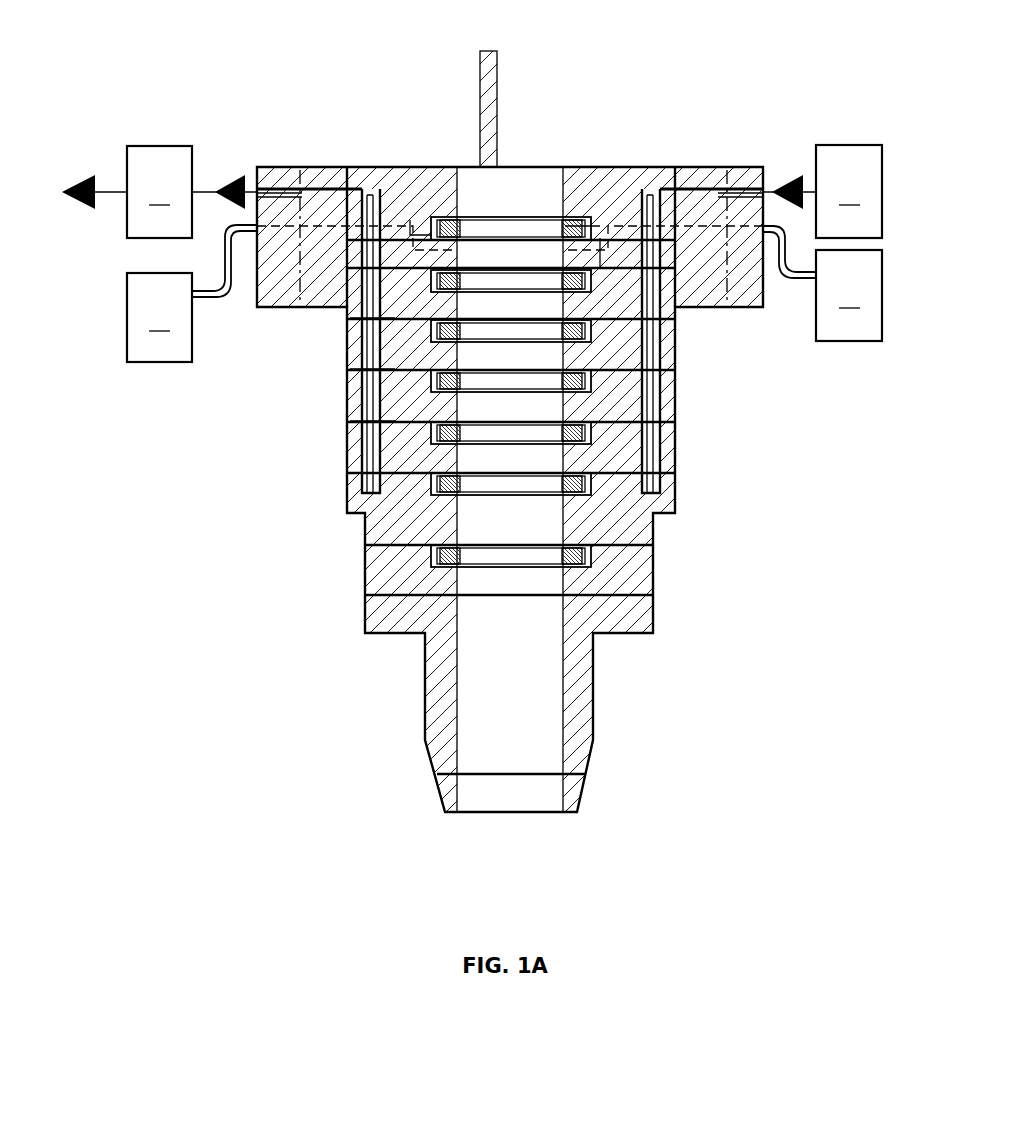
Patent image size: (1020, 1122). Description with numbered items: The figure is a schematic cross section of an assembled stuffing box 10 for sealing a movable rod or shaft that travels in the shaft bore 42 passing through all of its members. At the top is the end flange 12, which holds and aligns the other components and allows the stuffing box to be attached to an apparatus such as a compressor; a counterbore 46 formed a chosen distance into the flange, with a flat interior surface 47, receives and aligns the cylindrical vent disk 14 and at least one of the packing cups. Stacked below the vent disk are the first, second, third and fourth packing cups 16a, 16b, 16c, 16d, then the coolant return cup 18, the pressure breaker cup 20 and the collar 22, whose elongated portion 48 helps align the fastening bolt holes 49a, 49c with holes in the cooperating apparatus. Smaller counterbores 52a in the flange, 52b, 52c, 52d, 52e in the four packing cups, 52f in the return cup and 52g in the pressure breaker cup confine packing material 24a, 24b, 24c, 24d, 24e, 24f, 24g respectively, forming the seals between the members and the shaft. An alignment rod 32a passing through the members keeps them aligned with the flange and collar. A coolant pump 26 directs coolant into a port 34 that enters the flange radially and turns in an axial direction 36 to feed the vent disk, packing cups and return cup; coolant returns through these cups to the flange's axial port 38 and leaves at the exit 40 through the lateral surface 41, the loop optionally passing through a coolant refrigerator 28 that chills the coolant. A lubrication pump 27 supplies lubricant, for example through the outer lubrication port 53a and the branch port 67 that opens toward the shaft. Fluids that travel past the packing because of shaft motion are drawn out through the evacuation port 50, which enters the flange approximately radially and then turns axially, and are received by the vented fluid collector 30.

The stuffing box 10 is at (782, 587).
The end flange 12 is at (748, 164).
The vent disk 14 is at (623, 240).
The first packing cup 16a is at (345, 328).
The second packing cup 16b is at (345, 382).
The third packing cup 16c is at (345, 432).
The fourth packing cup 16d is at (345, 487).
The coolant return cup 18 is at (658, 538).
The pressure breaker cup 20 is at (658, 582).
The collar 22 is at (425, 668).
The packing material 24a is at (448, 220).
The packing material 24b is at (587, 283).
The packing material 24c is at (587, 333).
The packing material 24d is at (587, 383).
The packing material 24e is at (587, 435).
The packing material 24f is at (587, 485).
The packing material 24g is at (440, 560).
The coolant pump 26 is at (822, 191).
The lubrication pump 27 is at (822, 283).
The coolant refrigerator 28 is at (159, 192).
The vented fluid collector 30 is at (192, 293).
The alignment rod 32a is at (498, 80).
The port 34 is at (767, 168).
The axial direction 36 is at (664, 200).
The axial port 38 is at (378, 190).
The exit 40 is at (268, 166).
The lateral surface 41 is at (258, 300).
The shaft bore 42 is at (520, 800).
The counterbore 46 is at (730, 305).
The flat interior surface 47 is at (596, 235).
The elongated portion 48 is at (594, 683).
The fastening bolt hole 49a is at (347, 166).
The fastening bolt hole 49c is at (675, 289).
The evacuation port 50 is at (315, 166).
The smaller counterbore 52a is at (569, 192).
The smaller counterbore 52b is at (344, 355).
The smaller counterbore 52c is at (344, 404).
The smaller counterbore 52d is at (344, 457).
The smaller counterbore 52e is at (365, 518).
The smaller counterbore 52f is at (367, 548).
The smaller counterbore 52g is at (367, 594).
The outer lubrication port 53a is at (760, 215).
The port 67 is at (575, 205).